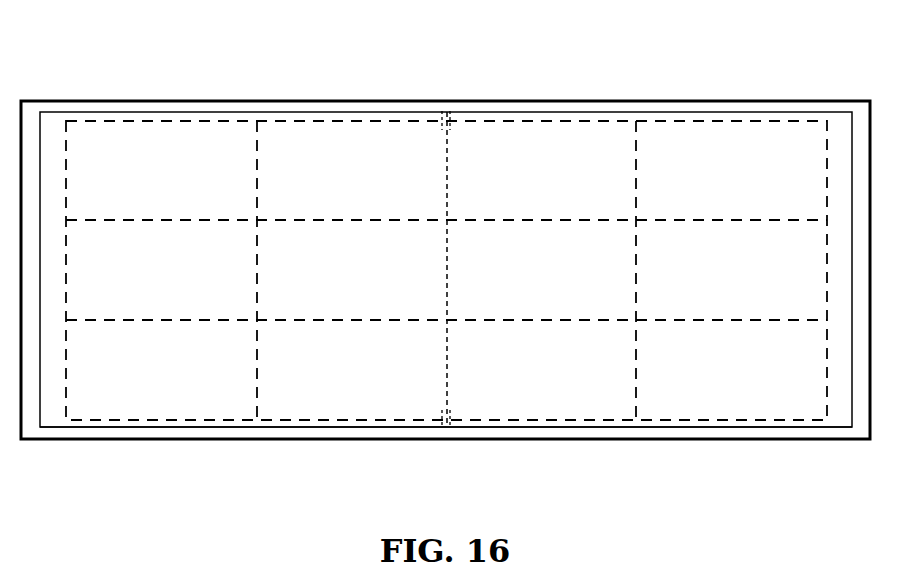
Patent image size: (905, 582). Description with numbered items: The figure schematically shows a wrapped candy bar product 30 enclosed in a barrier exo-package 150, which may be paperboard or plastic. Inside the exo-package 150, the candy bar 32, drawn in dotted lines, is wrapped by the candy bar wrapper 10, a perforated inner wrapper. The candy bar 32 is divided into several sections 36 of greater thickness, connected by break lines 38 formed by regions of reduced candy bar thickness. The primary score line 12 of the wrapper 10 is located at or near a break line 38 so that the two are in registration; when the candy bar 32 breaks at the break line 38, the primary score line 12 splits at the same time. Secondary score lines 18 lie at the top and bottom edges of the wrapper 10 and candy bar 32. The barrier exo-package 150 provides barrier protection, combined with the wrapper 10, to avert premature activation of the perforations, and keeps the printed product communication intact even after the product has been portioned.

The wrapped candy bar product 30 is at (448, 271).
The barrier exo-package 150 is at (72, 101).
The candy bar wrapper 10 is at (200, 113).
The section 36 is at (540, 373).
The break line 38 is at (432, 137).
The primary score line 12 is at (447, 160).
The secondary score line 18 is at (440, 418).
The candy bar 32 is at (152, 420).